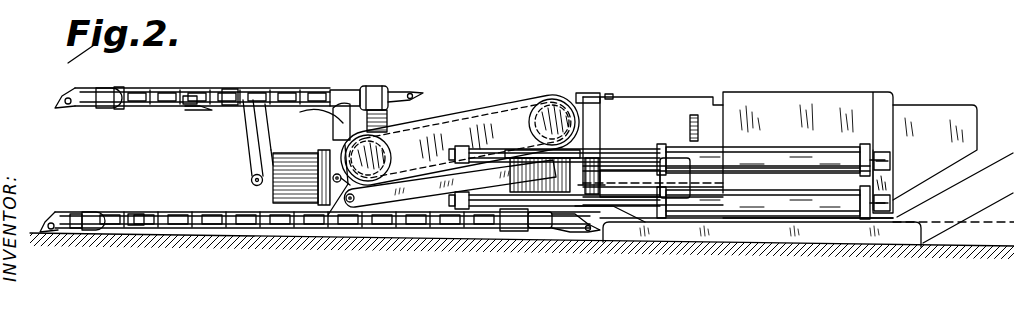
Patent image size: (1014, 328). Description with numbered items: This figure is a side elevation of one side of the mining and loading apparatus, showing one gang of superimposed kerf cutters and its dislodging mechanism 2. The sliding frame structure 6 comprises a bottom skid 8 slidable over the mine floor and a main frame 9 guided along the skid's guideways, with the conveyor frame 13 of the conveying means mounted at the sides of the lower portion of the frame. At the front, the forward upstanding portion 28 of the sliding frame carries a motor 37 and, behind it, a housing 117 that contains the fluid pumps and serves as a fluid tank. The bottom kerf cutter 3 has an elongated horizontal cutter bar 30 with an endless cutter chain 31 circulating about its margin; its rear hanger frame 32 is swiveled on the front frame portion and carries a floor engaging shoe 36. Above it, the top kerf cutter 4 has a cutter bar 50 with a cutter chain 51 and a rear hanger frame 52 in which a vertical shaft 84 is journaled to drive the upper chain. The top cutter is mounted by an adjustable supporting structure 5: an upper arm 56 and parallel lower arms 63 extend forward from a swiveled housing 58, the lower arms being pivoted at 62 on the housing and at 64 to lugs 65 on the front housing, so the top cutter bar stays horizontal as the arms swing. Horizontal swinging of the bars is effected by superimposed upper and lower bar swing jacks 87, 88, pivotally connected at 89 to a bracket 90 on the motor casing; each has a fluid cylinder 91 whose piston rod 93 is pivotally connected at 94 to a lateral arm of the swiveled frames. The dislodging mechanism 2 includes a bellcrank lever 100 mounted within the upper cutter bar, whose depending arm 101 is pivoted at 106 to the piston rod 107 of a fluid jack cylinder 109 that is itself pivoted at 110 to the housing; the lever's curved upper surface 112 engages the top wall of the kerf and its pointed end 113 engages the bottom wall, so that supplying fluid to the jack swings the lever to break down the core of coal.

The dislodging mechanism 2 is at (240, 143).
The bottom kerf cutter 3 is at (185, 212).
The top kerf cutter 4 is at (142, 88).
The adjustable supporting structure 5 is at (460, 127).
The sliding frame structure 6 is at (800, 92).
The bottom skid 8 is at (748, 235).
The main frame 9 is at (838, 220).
The conveyor frame 13 is at (685, 220).
The forward upstanding portion 28 is at (613, 147).
The cutter bar 30 is at (141, 212).
The cutter chain 31 is at (89, 213).
The rear hanger frame 32 is at (505, 212).
The floor engaging shoe 36 is at (513, 238).
The motor 37 is at (858, 107).
The cutter bar 50 is at (173, 88).
The cutter chain 51 is at (189, 95).
The rear hanger frame 52 is at (318, 118).
The upper arm 56 is at (433, 128).
The swiveled housing 58 is at (583, 95).
The pivotal connection 62 is at (532, 162).
The lower arm 63 is at (443, 182).
The pivotal connection 64 is at (350, 205).
The lug 65 is at (328, 232).
The vertical shaft 84 is at (367, 90).
The upper bar swing jack 87 is at (793, 158).
The lower bar swing jack 88 is at (790, 202).
The pivotal connection 89 is at (888, 166).
The bracket 90 is at (896, 198).
The fluid cylinder 91 is at (757, 136).
The piston rod 93 is at (625, 202).
The pivotal connection 94 is at (468, 151).
The bellcrank lever 100 is at (247, 152).
The depending arm 101 is at (256, 140).
The pivotal connection 106 is at (264, 184).
The piston rod 107 is at (262, 161).
The fluid jack cylinder 109 is at (322, 160).
The pivotal connection 110 is at (337, 176).
The curved upper surface 112 is at (230, 90).
The pointed end 113 is at (207, 108).
The housing 117 is at (950, 117).